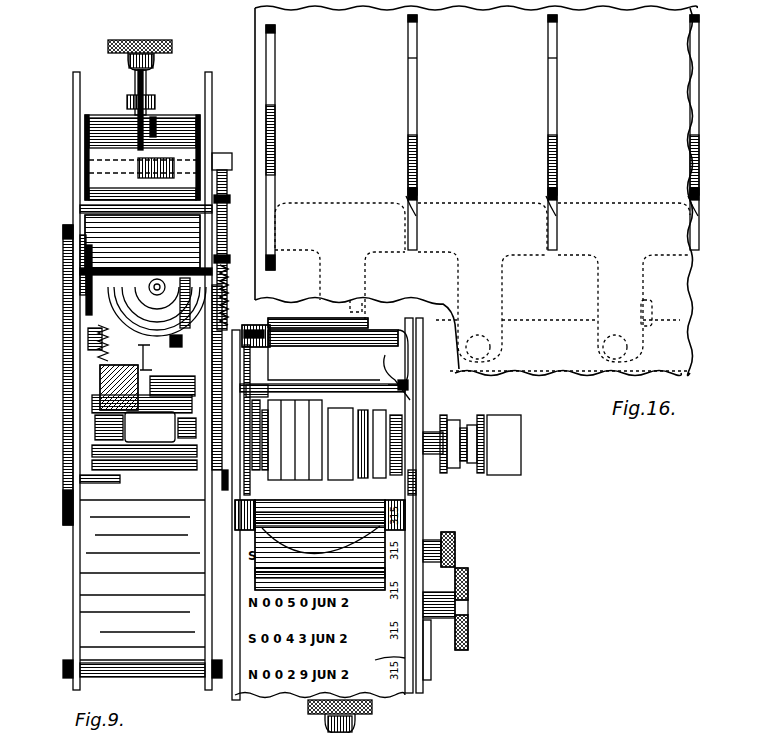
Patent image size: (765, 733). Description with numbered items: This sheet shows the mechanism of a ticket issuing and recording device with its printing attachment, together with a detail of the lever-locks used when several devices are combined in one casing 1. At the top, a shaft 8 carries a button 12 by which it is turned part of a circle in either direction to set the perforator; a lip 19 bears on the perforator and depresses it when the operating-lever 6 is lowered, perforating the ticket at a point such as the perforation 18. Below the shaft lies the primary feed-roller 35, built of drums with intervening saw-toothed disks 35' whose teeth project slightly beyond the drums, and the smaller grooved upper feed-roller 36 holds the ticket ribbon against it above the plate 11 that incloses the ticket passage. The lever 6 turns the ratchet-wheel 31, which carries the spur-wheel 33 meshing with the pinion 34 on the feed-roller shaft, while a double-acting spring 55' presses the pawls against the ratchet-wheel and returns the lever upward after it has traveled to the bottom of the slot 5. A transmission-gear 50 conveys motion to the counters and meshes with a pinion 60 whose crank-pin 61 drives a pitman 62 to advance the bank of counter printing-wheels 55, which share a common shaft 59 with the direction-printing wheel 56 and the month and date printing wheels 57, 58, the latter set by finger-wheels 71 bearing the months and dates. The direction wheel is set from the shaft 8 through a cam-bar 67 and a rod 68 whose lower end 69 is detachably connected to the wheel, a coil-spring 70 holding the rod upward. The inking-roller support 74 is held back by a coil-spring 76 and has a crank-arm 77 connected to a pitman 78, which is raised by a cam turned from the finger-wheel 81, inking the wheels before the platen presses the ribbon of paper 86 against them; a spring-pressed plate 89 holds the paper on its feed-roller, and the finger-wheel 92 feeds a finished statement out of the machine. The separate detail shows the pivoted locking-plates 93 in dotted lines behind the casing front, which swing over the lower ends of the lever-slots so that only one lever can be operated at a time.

In FIG. 16, the casing 1 is at (472, 155).
In FIG. 16, the vertical oblong slot 5 is at (275, 77).
In FIG. 9, the operating-lever 6 is at (88, 331).
In FIG. 16, the operating-lever 6 is at (275, 162).
In FIG. 9, the shaft 8 is at (157, 118).
In FIG. 9, the plate 11 is at (168, 442).
In FIG. 9, the button 12 is at (162, 50).
In FIG. 9, the perforation 18 is at (144, 360).
In FIG. 9, the lip 19 is at (108, 116).
In FIG. 9, the ratchet-wheel 31 is at (92, 404).
In FIG. 9, the spur-wheel 33 is at (68, 419).
In FIG. 9, the pinion 34 is at (80, 250).
In FIG. 9, the primary feed-roller 35 is at (56, 280).
In FIG. 9, the saw-toothed disks 35' is at (223, 355).
In FIG. 9, the upper feed-roller 36 is at (146, 245).
In FIG. 9, the transmission-gear 50 is at (218, 483).
In FIG. 9, the counter printing-wheels 55 is at (292, 418).
In FIG. 9, the double-acting spring 55' is at (118, 367).
In FIG. 9, the direction-printing wheel 56 is at (248, 448).
In FIG. 9, the month printing wheel 57 is at (334, 478).
In FIG. 9, the date printing wheel 58 is at (366, 478).
In FIG. 9, the common shaft 59 is at (434, 428).
In FIG. 9, the pinion 60 is at (190, 330).
In FIG. 9, the crank-pin 61 is at (318, 315).
In FIG. 9, the pitman 62 is at (256, 344).
In FIG. 9, the cam-bar 67 is at (217, 156).
In FIG. 9, the rod 68 is at (227, 244).
In FIG. 9, the lower end of rod 69 is at (250, 384).
In FIG. 9, the coil-spring 70 is at (228, 298).
In FIG. 9, the finger-wheels 71 is at (452, 478).
In FIG. 9, the support 74 is at (354, 345).
In FIG. 9, the coil-spring 76 is at (252, 330).
In FIG. 9, the crank-arm 77 is at (403, 357).
In FIG. 9, the pitman 78 is at (412, 392).
In FIG. 9, the finger-wheel 81 is at (468, 596).
In FIG. 9, the ribbon of paper 86 is at (433, 665).
In FIG. 9, the spring-pressed plate 89 is at (320, 545).
In FIG. 9, the finger-wheel 92 is at (456, 557).
In FIG. 16, the lever-locks 93 is at (305, 203).